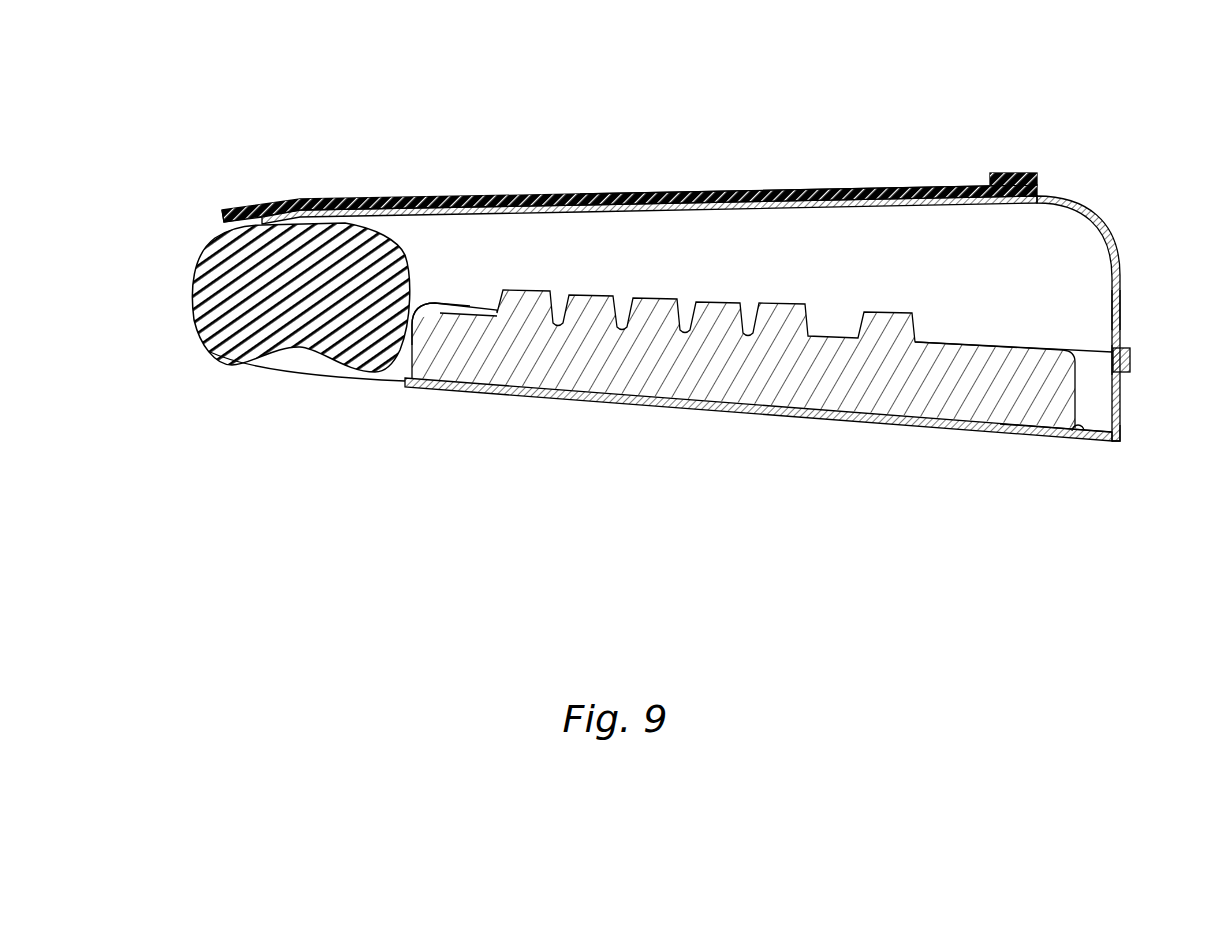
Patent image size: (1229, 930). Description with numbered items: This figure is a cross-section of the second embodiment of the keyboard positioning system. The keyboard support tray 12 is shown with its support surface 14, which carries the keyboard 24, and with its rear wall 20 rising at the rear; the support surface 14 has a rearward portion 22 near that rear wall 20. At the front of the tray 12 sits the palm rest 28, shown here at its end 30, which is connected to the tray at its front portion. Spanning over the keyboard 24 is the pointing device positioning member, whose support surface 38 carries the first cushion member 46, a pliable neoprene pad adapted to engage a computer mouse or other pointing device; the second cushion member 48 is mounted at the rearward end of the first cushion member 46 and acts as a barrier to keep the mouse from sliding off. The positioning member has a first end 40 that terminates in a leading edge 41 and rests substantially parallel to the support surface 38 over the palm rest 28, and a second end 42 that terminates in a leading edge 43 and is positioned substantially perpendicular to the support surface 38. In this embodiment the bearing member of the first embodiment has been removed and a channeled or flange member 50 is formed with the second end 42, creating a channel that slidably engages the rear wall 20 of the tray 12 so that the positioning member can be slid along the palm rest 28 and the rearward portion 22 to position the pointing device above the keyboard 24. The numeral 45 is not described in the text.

The keyboard support tray 12 is at (1125, 444).
The support surface 14 is at (703, 407).
The rear wall 20 is at (1122, 393).
The rearward portion 22 is at (1078, 440).
The keyboard 24 is at (580, 398).
The palm rest 28 is at (193, 328).
The end 30 is at (457, 303).
The support surface 38 is at (573, 213).
The first end 40 is at (322, 200).
The leading edge 41 is at (226, 224).
The second end 42 is at (1118, 312).
The leading edge 43 is at (1108, 370).
The side wall opening 45 is at (1118, 352).
The first cushion member 46 is at (787, 187).
The second cushion member 48 is at (1005, 172).
The flange member 50 is at (1130, 367).